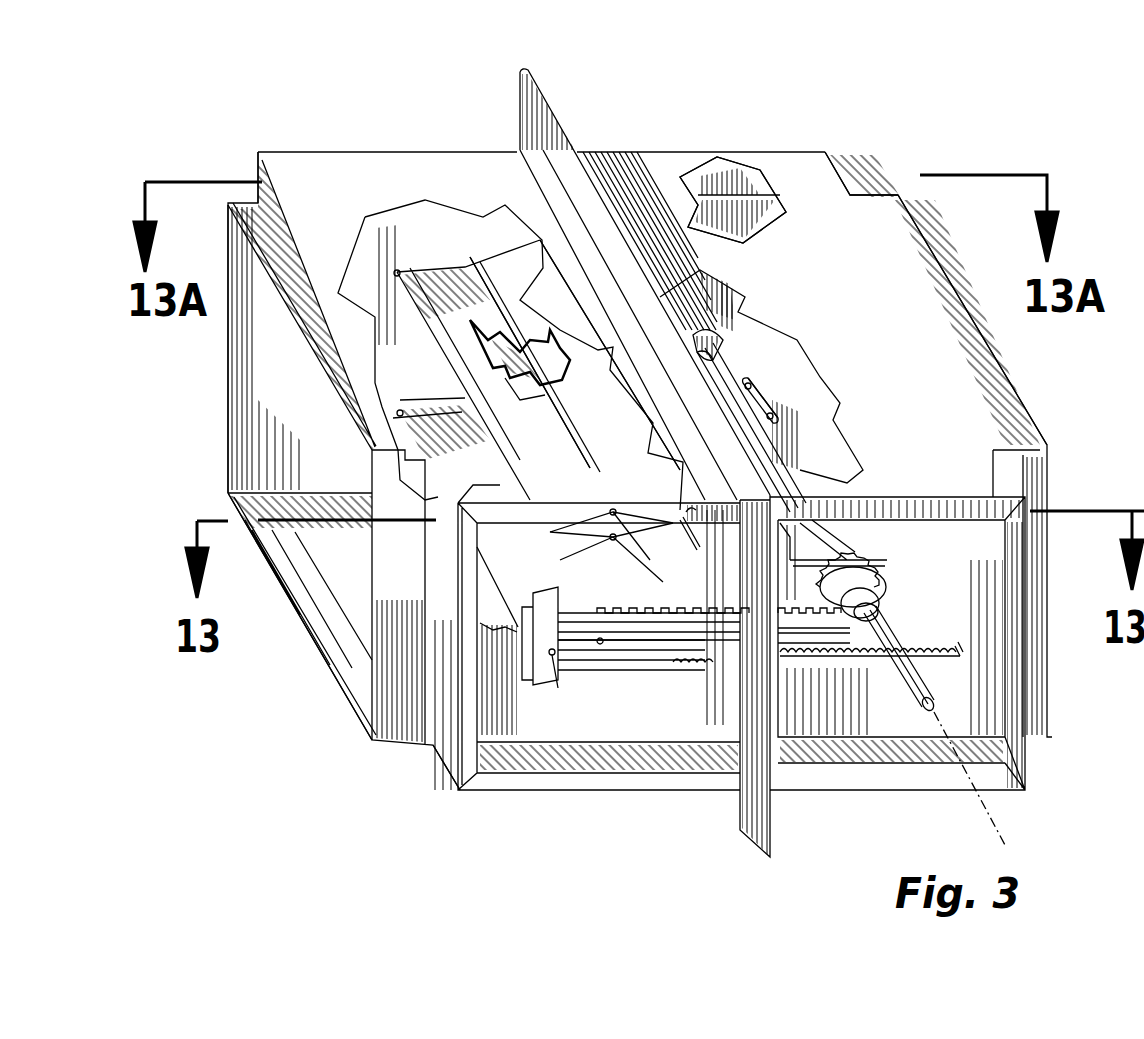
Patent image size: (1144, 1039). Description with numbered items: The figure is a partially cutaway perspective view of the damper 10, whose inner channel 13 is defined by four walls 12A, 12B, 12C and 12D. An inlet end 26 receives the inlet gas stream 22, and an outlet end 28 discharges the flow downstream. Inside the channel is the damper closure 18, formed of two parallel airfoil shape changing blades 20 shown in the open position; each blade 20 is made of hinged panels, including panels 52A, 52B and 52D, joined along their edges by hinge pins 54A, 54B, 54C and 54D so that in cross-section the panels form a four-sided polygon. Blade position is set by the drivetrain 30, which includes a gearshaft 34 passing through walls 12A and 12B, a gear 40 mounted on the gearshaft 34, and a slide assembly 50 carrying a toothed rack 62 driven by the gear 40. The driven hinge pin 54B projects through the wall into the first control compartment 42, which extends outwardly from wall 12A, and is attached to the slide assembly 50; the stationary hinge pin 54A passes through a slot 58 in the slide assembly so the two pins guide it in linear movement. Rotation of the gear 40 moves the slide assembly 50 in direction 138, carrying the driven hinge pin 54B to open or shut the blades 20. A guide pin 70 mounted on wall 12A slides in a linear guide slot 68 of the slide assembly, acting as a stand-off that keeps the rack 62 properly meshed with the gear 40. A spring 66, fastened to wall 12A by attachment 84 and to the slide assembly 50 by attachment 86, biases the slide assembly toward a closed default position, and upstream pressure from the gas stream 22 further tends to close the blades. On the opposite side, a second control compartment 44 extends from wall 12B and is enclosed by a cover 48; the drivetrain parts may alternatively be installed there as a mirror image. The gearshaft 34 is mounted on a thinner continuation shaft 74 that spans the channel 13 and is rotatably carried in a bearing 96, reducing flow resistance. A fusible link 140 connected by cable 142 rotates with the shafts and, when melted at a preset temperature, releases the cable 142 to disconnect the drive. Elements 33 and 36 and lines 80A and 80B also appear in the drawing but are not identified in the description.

The damper 10 is at (320, 130).
The wall 12A is at (416, 584).
The wall 12B is at (762, 215).
The wall 12C is at (440, 185).
The wall 12D is at (350, 623).
The inner channel 13 is at (372, 718).
The damper closure 18 is at (443, 278).
The blade 20 is at (506, 276).
The inlet gas stream 22 is at (262, 415).
The inlet end 26 is at (348, 668).
The outlet end 28 is at (1012, 402).
The drivetrain 30 is at (865, 843).
The shaft axis 33 is at (1000, 835).
The gearshaft 34 is at (892, 670).
The partition plate 36 is at (528, 118).
The gear 40 is at (890, 576).
The first control compartment 42 is at (445, 752).
The second control compartment 44 is at (258, 170).
The cover 48 is at (737, 172).
The slide assembly 50 is at (660, 648).
The hinged panel 52A is at (625, 540).
The hinged panel 52B is at (548, 392).
The hinged panel 52D is at (520, 395).
The stationary hinge pin 54A is at (672, 520).
The driven hinge pin 54B is at (548, 688).
The hinge pin 54C is at (552, 533).
The hinge pin 54D is at (570, 556).
The slot 58 is at (395, 272).
The toothed rack 62 is at (605, 650).
The spring 66 is at (940, 658).
The linear guide slot 68 is at (640, 645).
The guide pin 70 is at (826, 652).
The continuation shaft 74 is at (764, 446).
The guide rail 80A is at (568, 475).
The guide rail 80B is at (540, 382).
The attachment 84 is at (967, 645).
The attachment 86 is at (540, 660).
The bearing 96 is at (705, 336).
The direction 138 is at (952, 625).
The fusible link 140 is at (758, 395).
The cable 142 is at (733, 375).